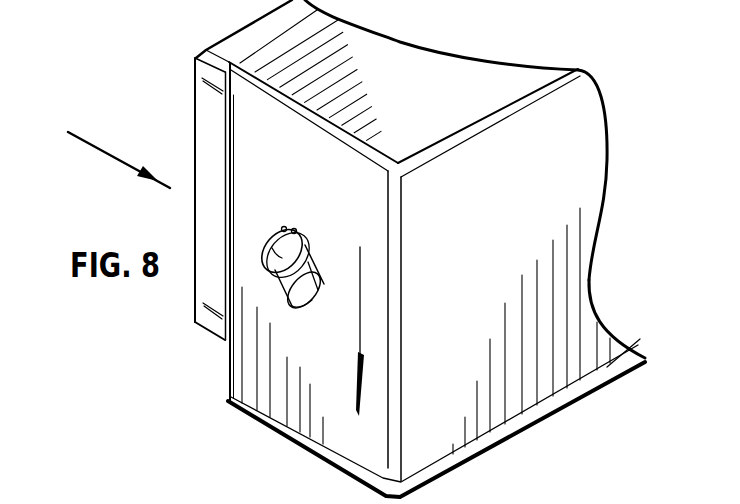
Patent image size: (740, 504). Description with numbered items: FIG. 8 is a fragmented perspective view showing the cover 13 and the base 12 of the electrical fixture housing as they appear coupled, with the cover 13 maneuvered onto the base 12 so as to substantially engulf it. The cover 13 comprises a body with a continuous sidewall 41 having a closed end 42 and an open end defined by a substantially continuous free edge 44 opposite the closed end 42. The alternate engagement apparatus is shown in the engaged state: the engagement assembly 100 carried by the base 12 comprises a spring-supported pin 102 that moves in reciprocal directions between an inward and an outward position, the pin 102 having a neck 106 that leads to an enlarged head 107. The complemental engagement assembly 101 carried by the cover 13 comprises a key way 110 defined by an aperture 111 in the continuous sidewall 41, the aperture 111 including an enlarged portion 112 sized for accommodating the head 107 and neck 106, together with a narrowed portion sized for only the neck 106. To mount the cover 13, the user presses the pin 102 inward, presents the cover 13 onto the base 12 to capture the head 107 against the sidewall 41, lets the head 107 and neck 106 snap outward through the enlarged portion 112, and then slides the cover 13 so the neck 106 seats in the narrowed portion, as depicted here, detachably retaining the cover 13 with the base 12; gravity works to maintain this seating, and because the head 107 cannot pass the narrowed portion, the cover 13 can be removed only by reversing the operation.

The base 12 is at (188, 113).
The cover 13 is at (598, 256).
The continuous sidewall 41 is at (407, 481).
The closed end 42 is at (591, 147).
The free edge 44 is at (231, 157).
The engagement assembly 100 is at (280, 201).
The complemental engagement assembly 101 is at (342, 299).
The pin 102 is at (325, 367).
The neck 106 is at (304, 233).
The enlarged head 107 is at (277, 254).
The key way 110 is at (324, 282).
The aperture 111 is at (322, 263).
The enlarged portion 112 is at (294, 306).